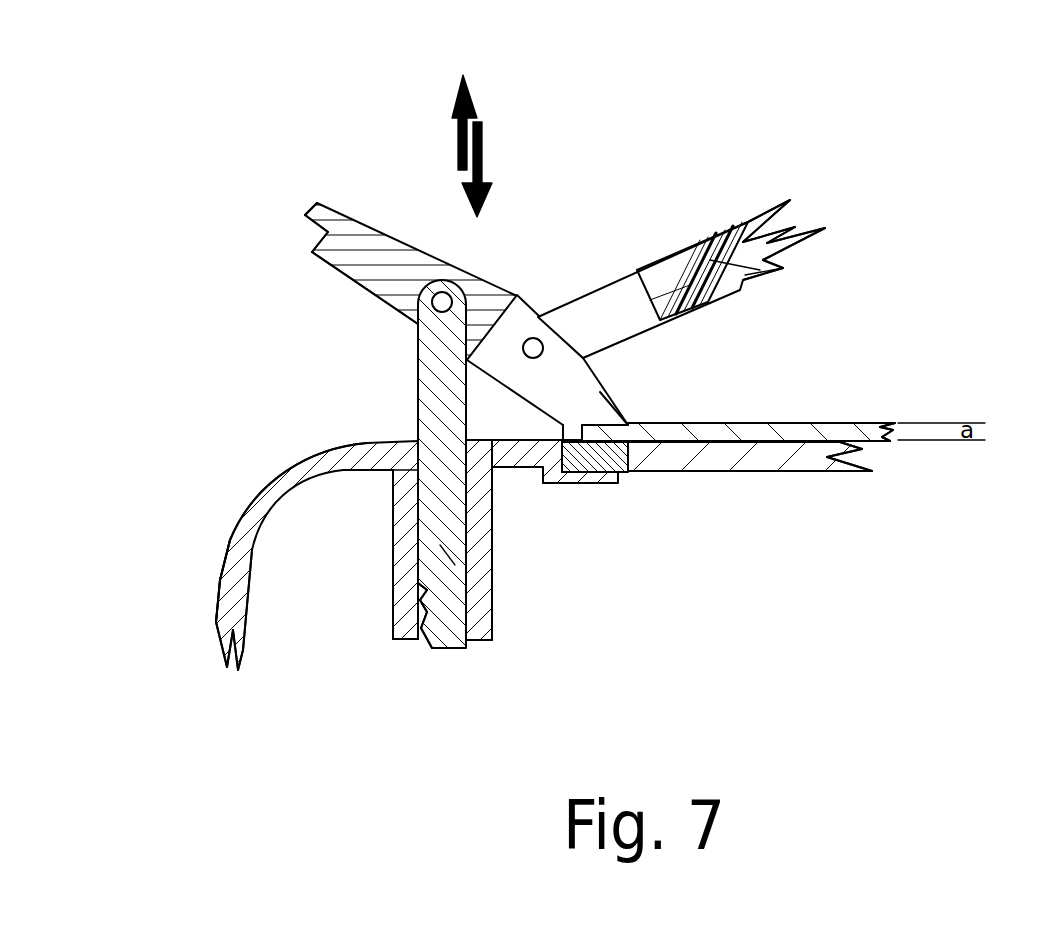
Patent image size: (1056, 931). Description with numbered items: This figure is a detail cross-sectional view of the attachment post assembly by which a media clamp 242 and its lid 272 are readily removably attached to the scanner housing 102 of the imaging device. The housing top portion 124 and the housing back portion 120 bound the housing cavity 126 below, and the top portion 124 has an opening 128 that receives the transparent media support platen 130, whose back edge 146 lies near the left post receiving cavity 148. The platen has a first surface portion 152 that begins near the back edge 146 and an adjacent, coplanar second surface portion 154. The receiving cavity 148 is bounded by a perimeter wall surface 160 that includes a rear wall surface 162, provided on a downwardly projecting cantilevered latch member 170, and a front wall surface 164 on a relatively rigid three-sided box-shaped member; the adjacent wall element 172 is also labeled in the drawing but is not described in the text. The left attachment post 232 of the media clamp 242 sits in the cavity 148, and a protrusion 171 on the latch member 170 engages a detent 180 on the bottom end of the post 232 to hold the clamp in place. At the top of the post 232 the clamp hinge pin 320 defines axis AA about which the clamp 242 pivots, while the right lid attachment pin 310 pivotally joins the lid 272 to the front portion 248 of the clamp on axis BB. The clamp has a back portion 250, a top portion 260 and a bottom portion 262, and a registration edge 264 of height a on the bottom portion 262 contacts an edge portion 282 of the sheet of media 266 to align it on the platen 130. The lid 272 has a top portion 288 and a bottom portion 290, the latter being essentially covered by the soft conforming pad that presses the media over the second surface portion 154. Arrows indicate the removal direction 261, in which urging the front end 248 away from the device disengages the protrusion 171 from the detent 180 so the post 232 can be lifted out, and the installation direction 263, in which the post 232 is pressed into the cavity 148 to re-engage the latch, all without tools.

The scanner housing 102 is at (204, 538).
The back portion 120 is at (224, 592).
The housing top portion 124 is at (333, 465).
The housing cavity 126 is at (352, 530).
The opening 128 is at (908, 462).
The transparent media support platen 130 is at (757, 457).
The back edge 146 is at (530, 440).
The left post receiving cavity 148 is at (418, 440).
The first surface portion 152 is at (613, 462).
The second surface portion 154 is at (806, 455).
The perimeter wall surface 160 is at (573, 733).
The rear wall surface 162 is at (415, 525).
The front wall surface 164 is at (450, 560).
The cantilevered latch member 170 is at (417, 577).
The protrusion 171 is at (415, 590).
The right sleeve 172 is at (480, 510).
The detent 180 is at (480, 637).
The left attachment post 232 is at (440, 370).
The media clamp 242 is at (361, 236).
The front portion 248 is at (628, 422).
The back portion 250 is at (310, 208).
The top portion 260 is at (472, 146).
The removal direction 261 is at (458, 138).
The bottom portion 262 is at (353, 283).
The installation direction 263 is at (482, 160).
The registration edge 264 is at (573, 430).
The sheet of media 266 is at (838, 423).
The lid 272 is at (745, 295).
The edge portion 282 is at (637, 423).
The top portion 288 is at (760, 213).
The bottom portion 290 is at (787, 296).
The right lid attachment pin 310 is at (533, 338).
The clamp hinge pin 320 is at (442, 302).